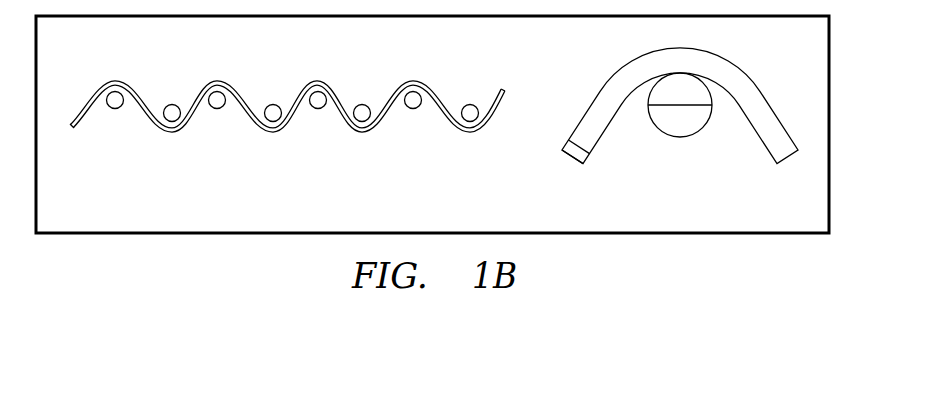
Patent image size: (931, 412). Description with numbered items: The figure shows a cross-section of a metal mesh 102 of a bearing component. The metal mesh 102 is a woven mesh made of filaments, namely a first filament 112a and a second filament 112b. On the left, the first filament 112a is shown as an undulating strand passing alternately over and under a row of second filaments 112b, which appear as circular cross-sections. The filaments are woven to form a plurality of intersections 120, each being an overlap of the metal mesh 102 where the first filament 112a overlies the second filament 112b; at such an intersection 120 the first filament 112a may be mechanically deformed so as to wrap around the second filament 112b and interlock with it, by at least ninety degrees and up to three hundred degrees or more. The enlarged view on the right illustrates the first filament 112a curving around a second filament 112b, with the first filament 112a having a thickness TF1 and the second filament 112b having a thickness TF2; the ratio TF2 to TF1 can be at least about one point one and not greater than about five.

The metal mesh 102 is at (501, 97).
The first filament 112a is at (437, 88).
The second filament 112b is at (410, 106).
The intersections 120 is at (470, 121).
The thickness of the first filament TF1 is at (574, 146).
The thickness of the second filament TF2 is at (670, 106).